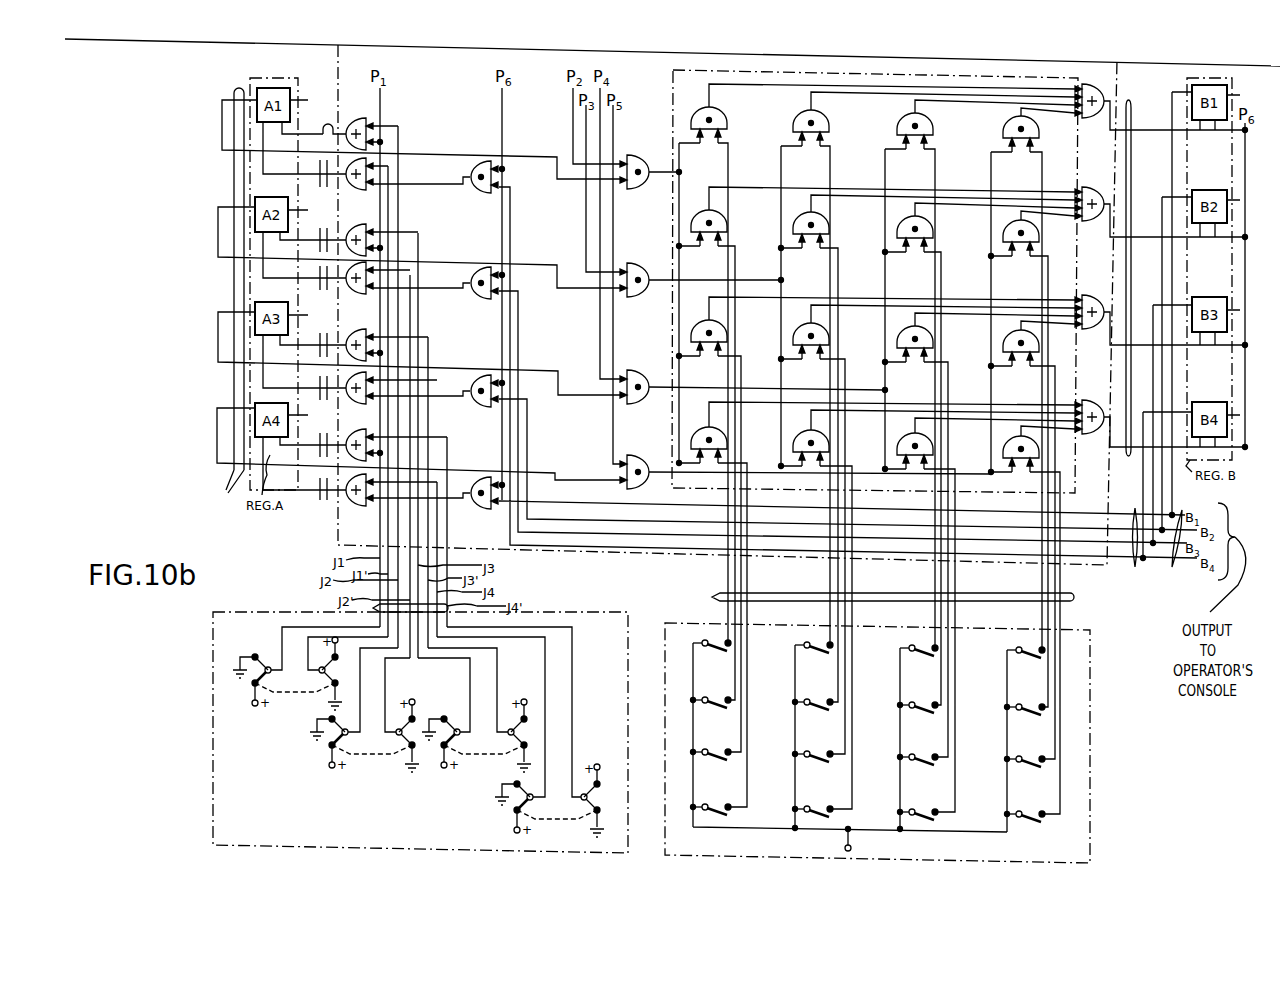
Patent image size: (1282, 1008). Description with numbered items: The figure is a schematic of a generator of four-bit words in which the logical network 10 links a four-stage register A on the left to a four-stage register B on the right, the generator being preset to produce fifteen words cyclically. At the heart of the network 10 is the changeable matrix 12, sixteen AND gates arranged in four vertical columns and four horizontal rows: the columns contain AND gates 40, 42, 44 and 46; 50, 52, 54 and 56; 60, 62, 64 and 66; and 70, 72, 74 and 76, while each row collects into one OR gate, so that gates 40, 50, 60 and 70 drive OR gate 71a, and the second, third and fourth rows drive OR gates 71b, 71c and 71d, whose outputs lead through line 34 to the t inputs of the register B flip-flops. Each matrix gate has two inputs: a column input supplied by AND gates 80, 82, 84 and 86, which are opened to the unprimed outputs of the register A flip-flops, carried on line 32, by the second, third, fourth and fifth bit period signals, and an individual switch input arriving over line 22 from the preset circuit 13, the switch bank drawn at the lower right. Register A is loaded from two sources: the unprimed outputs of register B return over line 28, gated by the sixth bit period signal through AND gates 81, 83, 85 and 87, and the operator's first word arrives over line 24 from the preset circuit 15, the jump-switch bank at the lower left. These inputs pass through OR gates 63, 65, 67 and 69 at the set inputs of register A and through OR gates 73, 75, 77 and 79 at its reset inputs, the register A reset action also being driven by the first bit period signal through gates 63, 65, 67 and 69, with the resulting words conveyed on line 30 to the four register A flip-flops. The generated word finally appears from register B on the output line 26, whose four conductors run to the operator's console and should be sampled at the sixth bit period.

The logical network 10 is at (338, 545).
The matrix 12 is at (1073, 490).
The preset circuit 13 is at (1090, 757).
The preset circuit 15 is at (213, 735).
The line 22 is at (712, 597).
The line 24 is at (373, 608).
The output line 26 is at (1173, 549).
The line 28 is at (1135, 550).
The line 30 is at (318, 490).
The line 32 is at (228, 301).
The line 34 is at (1132, 268).
The AND gate 40 is at (725, 115).
The AND gate 42 is at (725, 220).
The AND gate 44 is at (725, 330).
The AND gate 46 is at (725, 437).
The AND gate 50 is at (827, 118).
The AND gate 52 is at (827, 224).
The AND gate 54 is at (827, 333).
The AND gate 56 is at (827, 440).
The AND gate 60 is at (931, 121).
The AND gate 62 is at (931, 226).
The AND gate 64 is at (931, 336).
The AND gate 66 is at (931, 443).
The AND gate 70 is at (1037, 124).
The AND gate 72 is at (1037, 232).
The AND gate 74 is at (1037, 342).
The AND gate 76 is at (1037, 447).
The OR gate 71a is at (1100, 118).
The OR gate 71b is at (1100, 221).
The OR gate 71c is at (1100, 329).
The OR gate 71d is at (1100, 400).
The OR gate 63 is at (348, 123).
The OR gate 65 is at (346, 232).
The OR gate 67 is at (347, 337).
The OR gate 69 is at (348, 433).
The OR gate 73 is at (348, 184).
The OR gate 75 is at (347, 290).
The OR gate 77 is at (347, 398).
The OR gate 79 is at (346, 502).
The AND gate 80 is at (640, 189).
The AND gate 82 is at (640, 297).
The AND gate 84 is at (640, 404).
The AND gate 86 is at (640, 489).
The AND gate 81 is at (478, 193).
The AND gate 83 is at (475, 299).
The AND gate 85 is at (475, 407).
The AND gate 87 is at (475, 509).